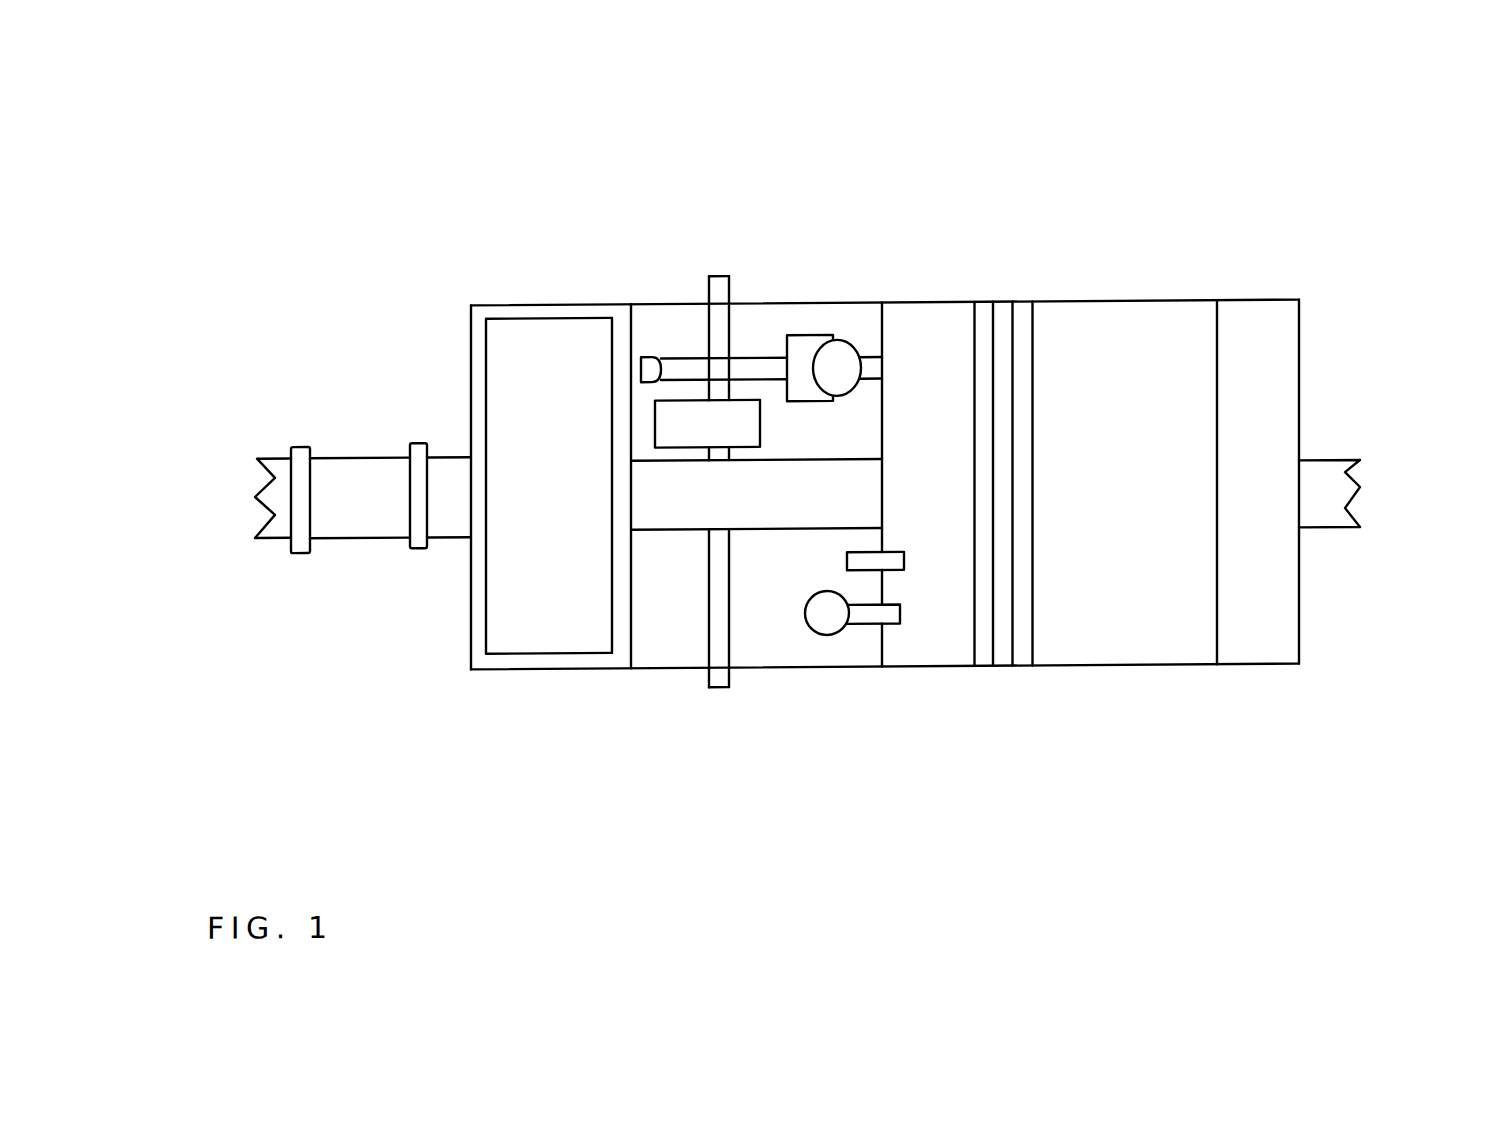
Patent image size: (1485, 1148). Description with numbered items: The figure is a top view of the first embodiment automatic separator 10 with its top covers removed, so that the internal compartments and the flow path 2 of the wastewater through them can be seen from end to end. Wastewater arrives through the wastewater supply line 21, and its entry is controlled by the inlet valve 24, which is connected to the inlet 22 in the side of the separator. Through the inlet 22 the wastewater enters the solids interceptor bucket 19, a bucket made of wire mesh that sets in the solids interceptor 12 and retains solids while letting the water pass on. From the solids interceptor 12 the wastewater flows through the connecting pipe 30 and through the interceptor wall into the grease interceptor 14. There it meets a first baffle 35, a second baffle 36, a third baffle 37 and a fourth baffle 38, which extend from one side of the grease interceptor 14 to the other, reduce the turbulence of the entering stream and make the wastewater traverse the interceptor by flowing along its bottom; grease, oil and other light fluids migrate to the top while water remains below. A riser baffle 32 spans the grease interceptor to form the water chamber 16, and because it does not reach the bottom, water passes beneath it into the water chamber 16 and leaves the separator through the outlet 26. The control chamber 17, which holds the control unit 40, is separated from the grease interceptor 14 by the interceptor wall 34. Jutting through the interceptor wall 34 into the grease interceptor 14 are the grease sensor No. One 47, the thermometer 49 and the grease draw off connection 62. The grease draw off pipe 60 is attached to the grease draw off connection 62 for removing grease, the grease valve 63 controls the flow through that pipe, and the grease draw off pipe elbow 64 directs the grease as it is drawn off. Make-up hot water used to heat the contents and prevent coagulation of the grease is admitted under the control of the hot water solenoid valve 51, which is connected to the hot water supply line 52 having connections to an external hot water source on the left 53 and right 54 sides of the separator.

The fluid flow direction 2 is at (210, 504).
The apparatus 10 is at (235, 871).
The solids interceptor 12 is at (620, 310).
The grease interceptor 14 is at (1123, 352).
The water chamber 16 is at (1255, 366).
The control chamber 17 is at (650, 586).
The solids interceptor bucket 19 is at (529, 374).
The wastewater supply line 21 is at (268, 454).
The inlet 22 is at (450, 455).
The inlet valve 24 is at (358, 453).
The outlet 26 is at (1363, 483).
The connecting pipe 30 is at (675, 518).
The riser baffle 32 is at (1215, 352).
The interceptor wall 34 is at (883, 638).
The first baffle 35 is at (975, 634).
The second baffle 36 is at (995, 618).
The third baffle 37 is at (1015, 599).
The fourth baffle 38 is at (1033, 576).
The control unit 40 is at (670, 416).
The grease sensor No. One 47 is at (827, 635).
The thermometer 49 is at (907, 563).
The hot water solenoid valve 51 is at (800, 333).
The hot water supply line 52 is at (732, 332).
The left side hot water connection 53 is at (722, 272).
The right side hot water connection 54 is at (718, 686).
The grease draw off pipe 60 is at (680, 352).
The grease draw off connection 62 is at (882, 370).
The grease valve 63 is at (853, 345).
The grease draw off pipe elbow 64 is at (641, 354).